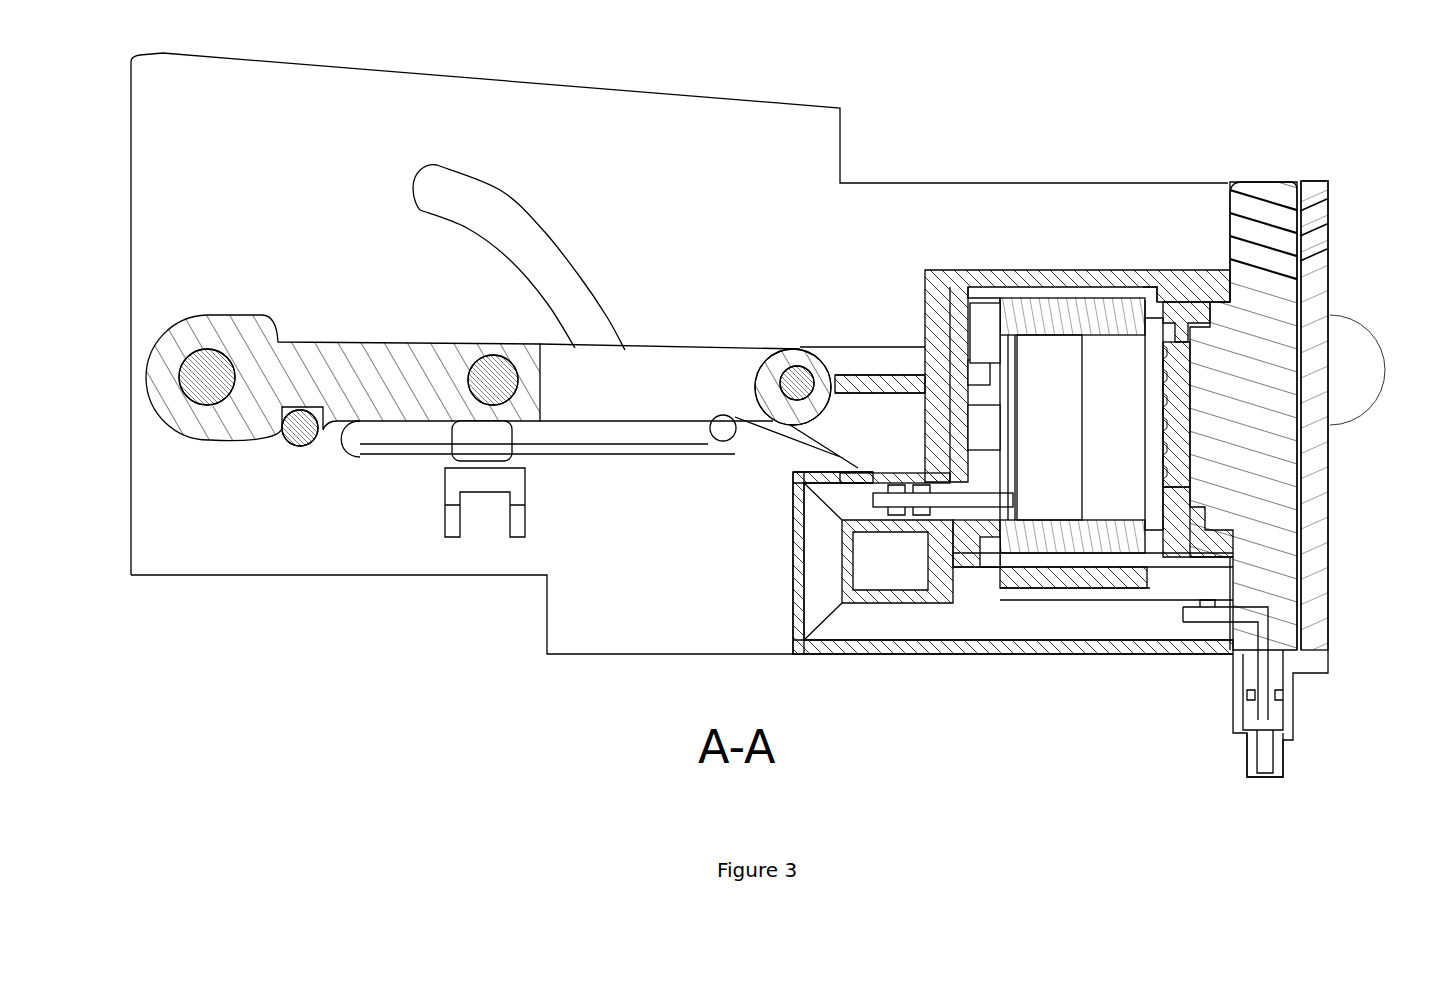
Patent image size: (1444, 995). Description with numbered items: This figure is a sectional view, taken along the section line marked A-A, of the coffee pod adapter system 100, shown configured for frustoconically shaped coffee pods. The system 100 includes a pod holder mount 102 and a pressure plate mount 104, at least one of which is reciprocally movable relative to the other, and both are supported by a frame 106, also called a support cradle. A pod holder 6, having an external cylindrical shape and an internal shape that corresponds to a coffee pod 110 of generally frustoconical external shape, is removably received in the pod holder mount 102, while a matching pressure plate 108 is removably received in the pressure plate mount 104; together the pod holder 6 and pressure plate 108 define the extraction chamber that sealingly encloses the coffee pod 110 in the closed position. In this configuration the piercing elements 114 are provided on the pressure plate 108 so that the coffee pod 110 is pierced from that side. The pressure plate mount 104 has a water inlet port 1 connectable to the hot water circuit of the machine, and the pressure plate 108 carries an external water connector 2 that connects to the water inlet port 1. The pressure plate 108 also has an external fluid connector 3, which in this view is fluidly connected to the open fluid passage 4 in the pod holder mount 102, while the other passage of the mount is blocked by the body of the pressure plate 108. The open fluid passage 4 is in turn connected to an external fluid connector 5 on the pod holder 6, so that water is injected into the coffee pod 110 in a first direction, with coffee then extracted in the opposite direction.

The coffee pod adapter system 100 is at (932, 72).
The pod holder mount 102 is at (1018, 268).
The pressure plate mount 104 is at (1327, 573).
The frame 106 is at (547, 619).
The pressure plate 108 is at (1263, 182).
The coffee pod 110 is at (1063, 432).
The piercing elements 114 is at (1163, 434).
The water inlet port 1 is at (1283, 752).
The external water connector 2 is at (1283, 712).
The external fluid connector 3 is at (1190, 628).
The fluid passage 4 is at (1055, 618).
The external fluid connector 5 is at (875, 488).
The pod holder 6 is at (1172, 268).